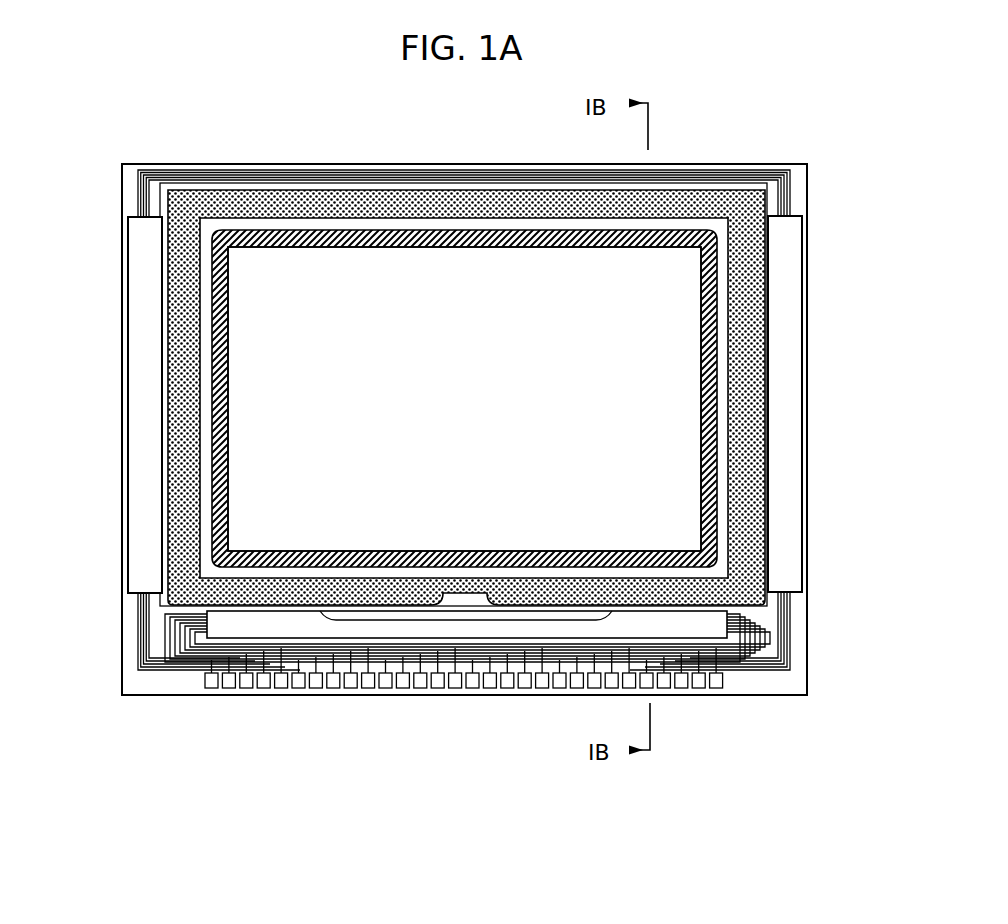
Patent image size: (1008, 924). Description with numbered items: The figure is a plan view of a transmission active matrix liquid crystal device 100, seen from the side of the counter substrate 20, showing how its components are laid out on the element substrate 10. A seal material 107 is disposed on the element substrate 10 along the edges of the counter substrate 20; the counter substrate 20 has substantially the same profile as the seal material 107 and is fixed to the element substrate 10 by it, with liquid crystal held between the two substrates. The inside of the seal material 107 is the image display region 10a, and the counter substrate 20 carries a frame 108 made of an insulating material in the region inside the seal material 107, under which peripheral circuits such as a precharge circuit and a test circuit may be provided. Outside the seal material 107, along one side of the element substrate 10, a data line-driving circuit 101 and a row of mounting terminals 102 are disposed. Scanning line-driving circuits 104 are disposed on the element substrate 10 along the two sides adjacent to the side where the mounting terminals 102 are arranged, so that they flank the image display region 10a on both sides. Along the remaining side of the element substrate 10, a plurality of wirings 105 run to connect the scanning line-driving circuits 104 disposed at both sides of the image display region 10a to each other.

The liquid crystal device 100 is at (758, 132).
The element substrate 10 is at (809, 535).
The counter substrate 20 is at (768, 572).
The image display region 10a is at (275, 344).
The data line-driving circuit 101 is at (218, 633).
The mounting terminals 102 is at (383, 690).
The scanning line-driving circuits 104 is at (142, 412).
The wirings 105 is at (322, 180).
The seal material 107 is at (746, 393).
The frame 108 is at (715, 317).